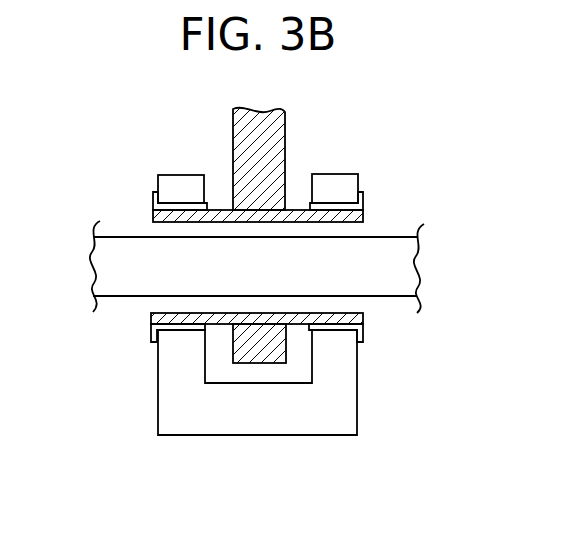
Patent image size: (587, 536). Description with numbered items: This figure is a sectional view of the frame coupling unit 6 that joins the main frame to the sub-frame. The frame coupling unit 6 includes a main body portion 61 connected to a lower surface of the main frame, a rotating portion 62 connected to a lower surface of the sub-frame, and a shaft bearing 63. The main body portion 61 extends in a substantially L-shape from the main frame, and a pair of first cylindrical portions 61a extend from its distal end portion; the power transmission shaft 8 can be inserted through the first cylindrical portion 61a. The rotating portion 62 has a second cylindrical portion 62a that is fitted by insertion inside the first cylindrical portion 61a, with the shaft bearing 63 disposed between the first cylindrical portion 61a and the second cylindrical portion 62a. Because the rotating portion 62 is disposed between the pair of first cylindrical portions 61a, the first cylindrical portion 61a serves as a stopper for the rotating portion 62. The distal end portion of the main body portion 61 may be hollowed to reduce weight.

The frame coupling unit 6 is at (116, 143).
The power transmission shaft 8 is at (255, 275).
The main body portion 61 is at (158, 402).
The first cylindrical portion 61a is at (185, 175).
The rotating portion 62 is at (232, 114).
The second cylindrical portion 62a is at (365, 218).
The shaft bearing 63 is at (152, 194).